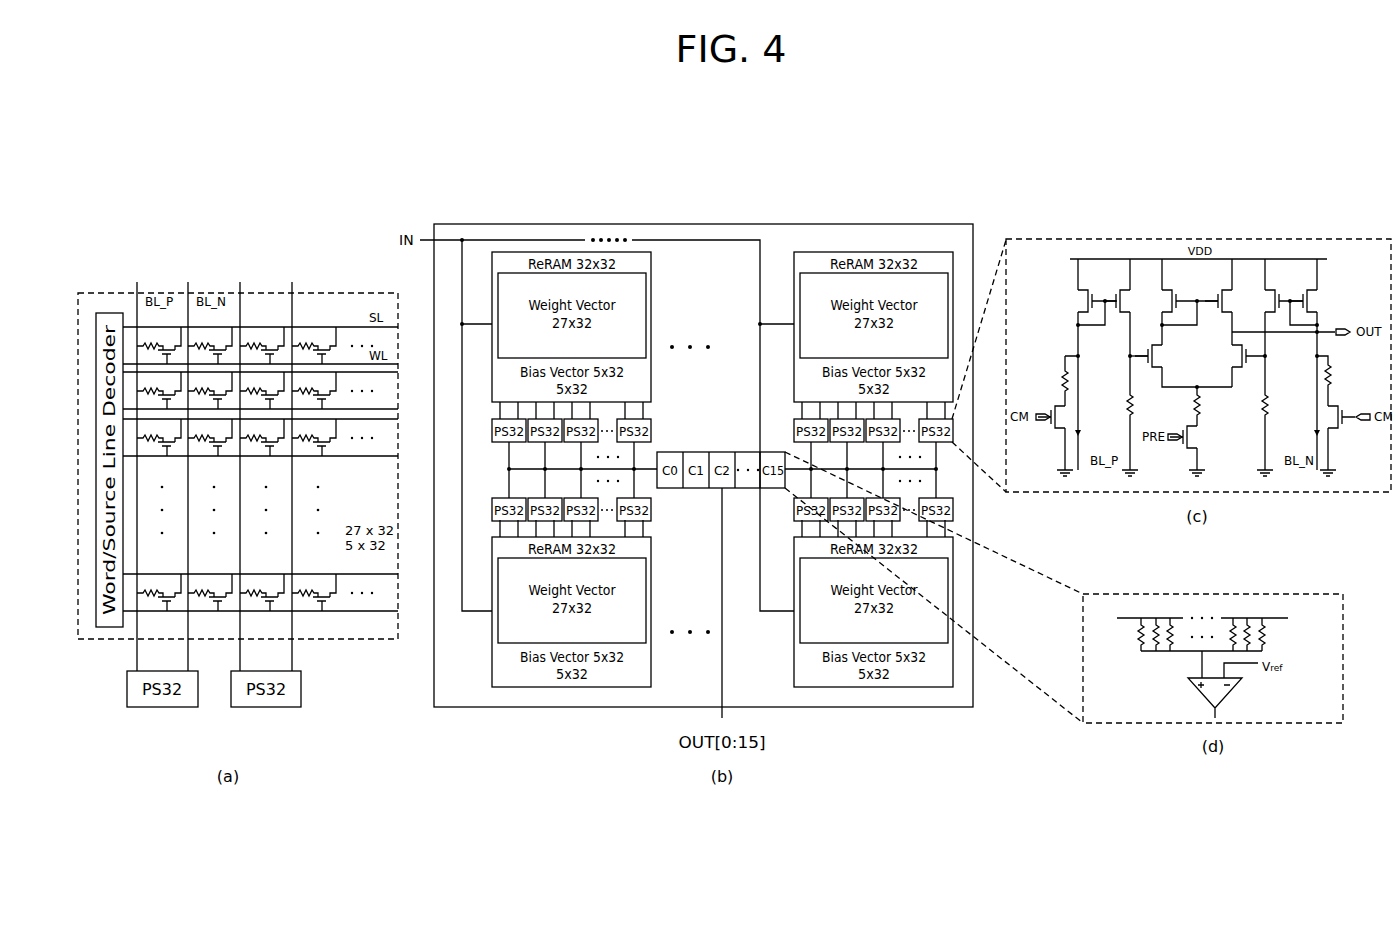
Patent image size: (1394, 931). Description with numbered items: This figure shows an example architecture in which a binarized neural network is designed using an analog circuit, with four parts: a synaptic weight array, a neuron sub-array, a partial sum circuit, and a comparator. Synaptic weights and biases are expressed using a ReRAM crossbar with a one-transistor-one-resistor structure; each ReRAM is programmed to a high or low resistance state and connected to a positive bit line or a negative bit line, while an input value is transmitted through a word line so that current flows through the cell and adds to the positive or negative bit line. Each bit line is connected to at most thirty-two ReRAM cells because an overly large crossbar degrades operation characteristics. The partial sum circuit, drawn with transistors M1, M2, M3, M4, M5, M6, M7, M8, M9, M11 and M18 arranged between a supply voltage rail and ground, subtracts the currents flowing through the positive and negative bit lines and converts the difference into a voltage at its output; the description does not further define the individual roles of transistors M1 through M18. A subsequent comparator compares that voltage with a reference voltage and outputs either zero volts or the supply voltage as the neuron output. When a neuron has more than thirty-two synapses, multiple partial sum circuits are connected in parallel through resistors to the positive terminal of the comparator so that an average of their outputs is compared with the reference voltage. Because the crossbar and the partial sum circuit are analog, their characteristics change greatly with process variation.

The transistor M1 is at (1060, 413).
The transistor M2 is at (1343, 413).
The transistor M3 is at (1192, 428).
The transistor M4 is at (1083, 364).
The transistor M5 is at (1126, 364).
The transistor M6 is at (1313, 364).
The transistor M7 is at (1270, 364).
The transistor M8 is at (1169, 302).
The transistor M9 is at (1228, 302).
The transistor M11 is at (1237, 366).
The transistor M18 is at (1183, 366).